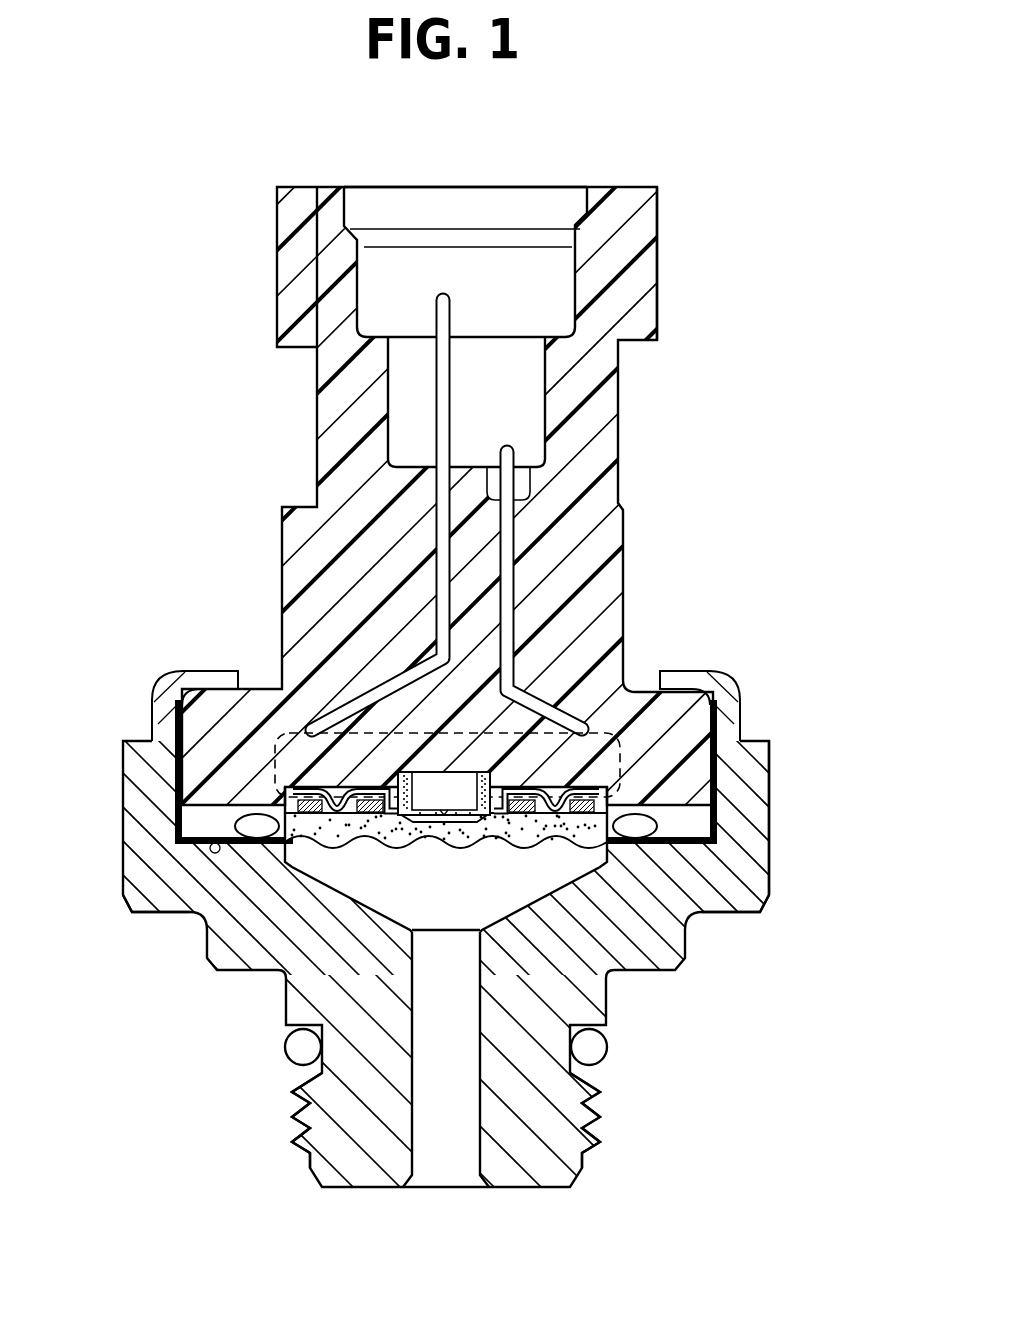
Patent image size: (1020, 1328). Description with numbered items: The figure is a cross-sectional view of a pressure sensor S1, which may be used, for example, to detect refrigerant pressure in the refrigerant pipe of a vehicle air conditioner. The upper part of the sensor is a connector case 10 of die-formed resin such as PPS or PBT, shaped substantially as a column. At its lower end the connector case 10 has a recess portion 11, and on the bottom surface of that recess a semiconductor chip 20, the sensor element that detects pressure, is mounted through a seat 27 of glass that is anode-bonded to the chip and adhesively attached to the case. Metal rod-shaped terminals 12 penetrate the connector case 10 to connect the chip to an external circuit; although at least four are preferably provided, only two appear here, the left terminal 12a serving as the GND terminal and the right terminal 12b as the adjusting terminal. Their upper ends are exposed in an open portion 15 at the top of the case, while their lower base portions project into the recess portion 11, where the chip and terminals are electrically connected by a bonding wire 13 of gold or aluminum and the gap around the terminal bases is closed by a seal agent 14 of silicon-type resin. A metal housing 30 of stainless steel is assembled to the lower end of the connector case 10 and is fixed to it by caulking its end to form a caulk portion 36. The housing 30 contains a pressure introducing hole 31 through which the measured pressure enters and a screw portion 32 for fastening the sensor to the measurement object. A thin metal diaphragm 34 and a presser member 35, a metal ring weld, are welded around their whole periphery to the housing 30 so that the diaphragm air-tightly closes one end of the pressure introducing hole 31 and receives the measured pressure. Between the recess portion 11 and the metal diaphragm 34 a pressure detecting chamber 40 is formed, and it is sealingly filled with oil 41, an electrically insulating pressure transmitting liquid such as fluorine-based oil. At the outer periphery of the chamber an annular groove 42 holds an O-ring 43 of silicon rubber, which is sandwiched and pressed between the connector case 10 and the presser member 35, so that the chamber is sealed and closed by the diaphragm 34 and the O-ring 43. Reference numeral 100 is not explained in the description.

The connector case 10 is at (585, 421).
The recess portion 11 is at (567, 848).
The terminals 12 is at (382, 515).
The terminal 12a is at (440, 420).
The terminal 12b is at (505, 530).
The bonding wire 13 is at (310, 852).
The seal agent 14 is at (317, 762).
The open portion 15 is at (587, 197).
The semiconductor chip 20 is at (468, 772).
The seat 27 is at (548, 740).
The housing 30 is at (125, 847).
The pressure introducing hole 31 is at (466, 1177).
The screw portion 32 is at (596, 1165).
The metal diaphragm 34 is at (490, 848).
The presser member 35 is at (128, 900).
The caulk portion 36 is at (685, 672).
The pressure detecting chamber 40 is at (430, 848).
The oil 41 is at (393, 1056).
The annular groove 42 is at (238, 815).
The O-ring 43 is at (265, 806).
The pressure sensor 100 is at (774, 770).
The pressure sensor S1 is at (671, 272).